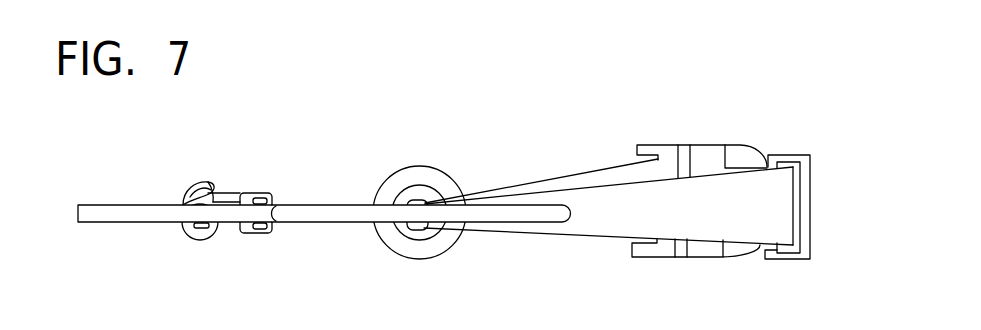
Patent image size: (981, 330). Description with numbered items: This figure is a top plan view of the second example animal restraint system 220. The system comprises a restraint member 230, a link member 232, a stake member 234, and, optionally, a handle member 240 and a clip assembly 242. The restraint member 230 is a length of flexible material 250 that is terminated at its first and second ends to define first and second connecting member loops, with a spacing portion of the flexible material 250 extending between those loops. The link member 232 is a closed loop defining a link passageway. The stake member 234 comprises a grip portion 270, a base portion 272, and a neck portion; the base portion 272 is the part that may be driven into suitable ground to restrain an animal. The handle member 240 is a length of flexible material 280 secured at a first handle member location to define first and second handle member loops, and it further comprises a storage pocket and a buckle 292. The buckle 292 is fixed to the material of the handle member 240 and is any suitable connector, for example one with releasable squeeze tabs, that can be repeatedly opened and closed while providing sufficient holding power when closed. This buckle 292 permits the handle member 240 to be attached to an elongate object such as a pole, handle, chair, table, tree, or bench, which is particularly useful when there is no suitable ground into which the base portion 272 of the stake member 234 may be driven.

The second example animal restraint system 220 is at (206, 128).
The restraint member 230 is at (100, 202).
The link member 232 is at (420, 237).
The stake member 234 is at (310, 202).
The handle member 240 is at (588, 238).
The clip assembly 242 is at (188, 196).
The flexible material 250 is at (128, 213).
The grip portion 270 is at (325, 213).
The base portion 272 is at (393, 247).
The flexible material 280 is at (602, 207).
The buckle 292 is at (698, 158).